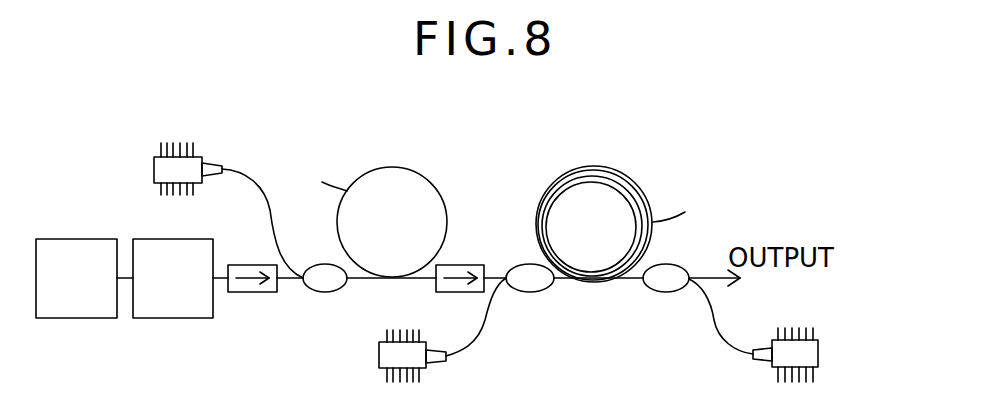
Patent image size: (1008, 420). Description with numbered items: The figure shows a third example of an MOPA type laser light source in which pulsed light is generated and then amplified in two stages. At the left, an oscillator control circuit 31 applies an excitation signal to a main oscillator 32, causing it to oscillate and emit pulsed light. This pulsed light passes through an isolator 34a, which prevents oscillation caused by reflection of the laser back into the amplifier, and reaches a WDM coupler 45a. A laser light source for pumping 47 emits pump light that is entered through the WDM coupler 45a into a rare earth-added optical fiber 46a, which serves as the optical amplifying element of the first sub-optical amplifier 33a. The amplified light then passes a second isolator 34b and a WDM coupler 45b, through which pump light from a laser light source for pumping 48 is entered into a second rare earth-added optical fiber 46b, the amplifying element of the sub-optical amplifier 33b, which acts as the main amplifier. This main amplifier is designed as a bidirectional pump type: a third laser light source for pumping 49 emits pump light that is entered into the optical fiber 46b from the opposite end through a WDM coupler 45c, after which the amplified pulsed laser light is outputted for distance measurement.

The oscillator control circuit 31 is at (80, 319).
The main oscillator 32 is at (172, 319).
The sub-optical amplifier 33a is at (413, 160).
The sub-optical amplifier 33b is at (656, 186).
The isolator 34a is at (250, 293).
The isolator 34b is at (456, 264).
The WDM coupler 45a is at (326, 293).
The WDM coupler 45b is at (537, 292).
The WDM coupler 45c is at (684, 266).
The rare earth-added optical fiber 46a is at (322, 182).
The rare earth-added optical fiber 46b is at (685, 212).
The laser light source for pumping 47 is at (154, 172).
The laser light source for pumping 48 is at (379, 357).
The laser light source for pumping 49 is at (818, 350).